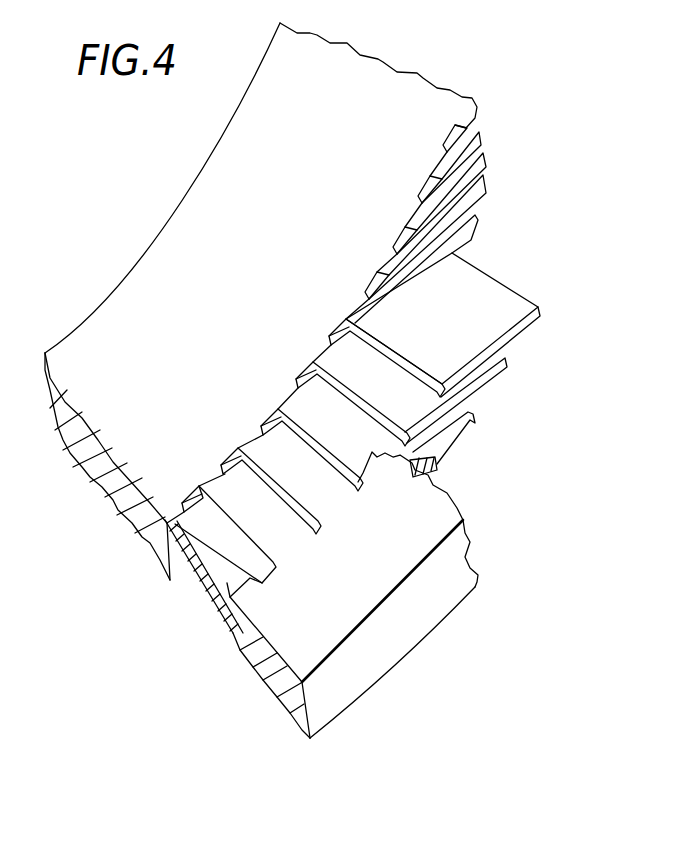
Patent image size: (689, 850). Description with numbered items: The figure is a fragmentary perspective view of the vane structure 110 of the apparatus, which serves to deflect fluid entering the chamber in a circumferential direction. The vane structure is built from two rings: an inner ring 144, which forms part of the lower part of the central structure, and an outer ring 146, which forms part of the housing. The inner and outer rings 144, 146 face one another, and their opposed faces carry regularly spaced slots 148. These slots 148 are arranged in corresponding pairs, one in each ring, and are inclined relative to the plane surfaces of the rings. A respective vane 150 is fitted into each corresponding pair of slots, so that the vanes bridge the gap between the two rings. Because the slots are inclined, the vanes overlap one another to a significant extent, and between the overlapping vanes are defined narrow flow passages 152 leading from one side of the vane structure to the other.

The heat exchange assembly 110 is at (510, 406).
The inner ring 144 is at (112, 412).
The outer ring 146 is at (283, 638).
The slots 148 is at (228, 462).
The vane 150 is at (317, 488).
The flow passages 152 is at (443, 423).